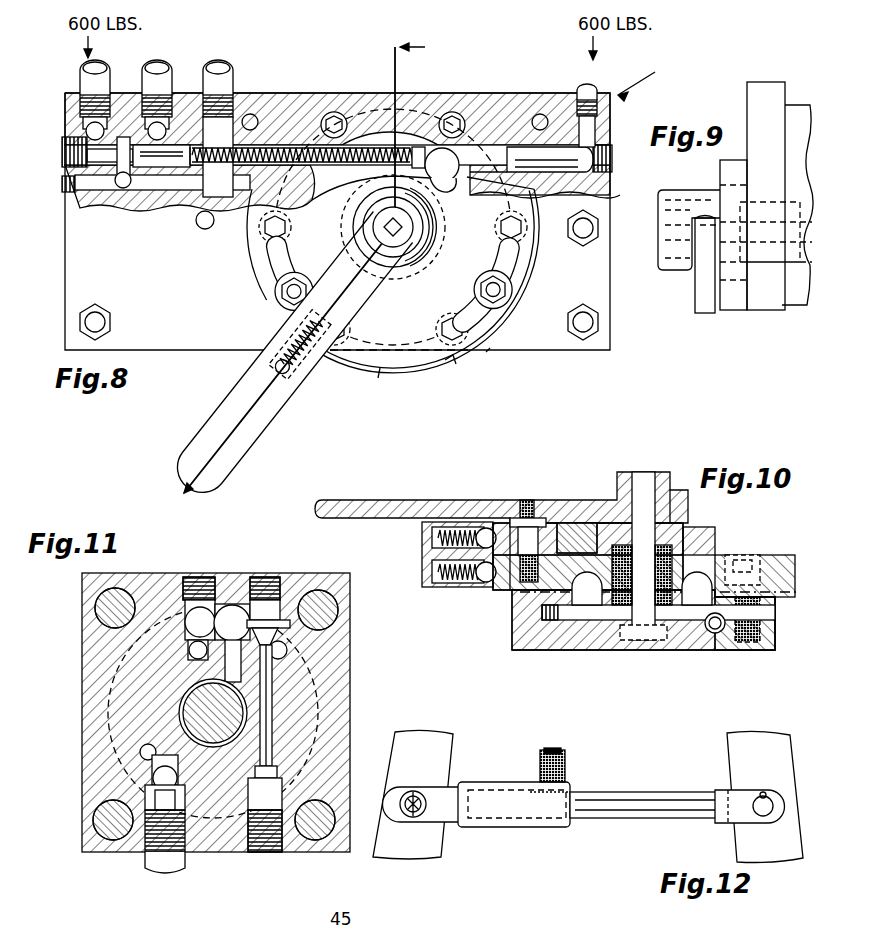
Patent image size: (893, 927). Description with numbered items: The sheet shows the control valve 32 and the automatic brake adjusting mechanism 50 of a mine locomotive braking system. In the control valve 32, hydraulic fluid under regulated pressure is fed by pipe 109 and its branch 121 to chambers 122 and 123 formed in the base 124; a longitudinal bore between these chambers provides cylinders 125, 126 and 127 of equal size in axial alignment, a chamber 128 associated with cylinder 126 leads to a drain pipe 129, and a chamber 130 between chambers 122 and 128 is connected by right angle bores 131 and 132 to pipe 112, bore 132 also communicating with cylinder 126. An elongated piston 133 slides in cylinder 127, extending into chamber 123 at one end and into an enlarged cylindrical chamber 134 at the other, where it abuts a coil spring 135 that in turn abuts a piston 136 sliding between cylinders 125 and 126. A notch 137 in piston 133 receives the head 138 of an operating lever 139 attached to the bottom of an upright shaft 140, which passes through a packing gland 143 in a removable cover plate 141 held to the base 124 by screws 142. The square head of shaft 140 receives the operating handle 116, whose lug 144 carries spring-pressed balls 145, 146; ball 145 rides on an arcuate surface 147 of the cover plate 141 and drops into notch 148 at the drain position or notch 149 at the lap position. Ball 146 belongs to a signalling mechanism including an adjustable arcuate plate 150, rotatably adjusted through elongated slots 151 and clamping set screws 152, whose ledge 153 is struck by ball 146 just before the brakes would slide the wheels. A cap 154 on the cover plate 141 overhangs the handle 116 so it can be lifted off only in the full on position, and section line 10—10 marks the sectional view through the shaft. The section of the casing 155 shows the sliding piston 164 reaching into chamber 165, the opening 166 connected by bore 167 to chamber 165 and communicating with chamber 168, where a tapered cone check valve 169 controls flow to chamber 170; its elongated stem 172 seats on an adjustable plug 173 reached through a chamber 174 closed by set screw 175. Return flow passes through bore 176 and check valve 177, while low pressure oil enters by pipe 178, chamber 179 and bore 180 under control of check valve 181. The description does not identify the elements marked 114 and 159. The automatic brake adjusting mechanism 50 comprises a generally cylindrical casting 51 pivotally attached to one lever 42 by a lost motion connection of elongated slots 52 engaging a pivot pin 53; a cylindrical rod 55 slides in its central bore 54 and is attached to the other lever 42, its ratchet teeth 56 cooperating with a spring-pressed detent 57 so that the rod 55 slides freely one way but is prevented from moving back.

In FIG. 8, the section line 10— 10 is at (318, 284).
In FIG. 8, the control valve 32 is at (649, 78).
In FIG. 12, the lever 42 is at (588, 796).
In FIG. 12, the automatic brake adjusting mechanism 50 is at (622, 832).
In FIG. 12, the generally cylindrical casting 51 is at (525, 830).
In FIG. 12, the elongated slots 52 is at (403, 812).
In FIG. 12, the pivot pin 53 is at (422, 808).
In FIG. 12, the central bore 54 is at (490, 792).
In FIG. 12, the cylindrical rod 55 is at (684, 820).
In FIG. 12, the ratchet teeth 56 is at (575, 790).
In FIG. 12, the spring-pressed detent 57 is at (567, 770).
In FIG. 8, the pipe 109 is at (100, 78).
In FIG. 8, the pipe 112 is at (224, 76).
In FIG. 11, the valve block 114 is at (158, 570).
In FIG. 8, the operating handle 116 is at (215, 430).
In FIG. 9, the operating handle 116 is at (705, 305).
In FIG. 10, the operating handle 116 is at (405, 505).
In FIG. 8, the branch 121 is at (590, 84).
In FIG. 8, the chamber 122 is at (82, 150).
In FIG. 8, the chamber 123 is at (603, 148).
In FIG. 8, the base 124 is at (500, 110).
In FIG. 9, the base 124 is at (797, 108).
In FIG. 10, the base 124 is at (528, 650).
In FIG. 8, the cylinder 125 is at (105, 162).
In FIG. 8, the cylinder 126 is at (195, 190).
In FIG. 8, the cylinder 127 is at (505, 176).
In FIG. 8, the chamber 128 is at (182, 128).
In FIG. 8, the drain pipe 129 is at (160, 70).
In FIG. 8, the chamber 130 is at (123, 137).
In FIG. 8, the bore 131 is at (205, 229).
In FIG. 8, the bore 132 is at (225, 132).
In FIG. 8, the elongated piston 133 is at (552, 160).
In FIG. 8, the enlarged cylindrical chamber 134 is at (333, 182).
In FIG. 10, the enlarged cylindrical chamber 134 is at (580, 620).
In FIG. 8, the coil spring 135 is at (292, 152).
In FIG. 10, the coil spring 135 is at (718, 634).
In FIG. 8, the piston 136 is at (160, 168).
In FIG. 8, the notch 137 is at (420, 150).
In FIG. 8, the head 138 is at (446, 182).
In FIG. 8, the operating lever 139 is at (435, 193).
In FIG. 10, the operating lever 139 is at (655, 632).
In FIG. 8, the upright shaft 140 is at (393, 247).
In FIG. 9, the upright shaft 140 is at (763, 240).
In FIG. 10, the upright shaft 140 is at (648, 552).
In FIG. 8, the removable cover plate 141 is at (550, 342).
In FIG. 9, the removable cover plate 141 is at (768, 90).
In FIG. 10, the removable cover plate 141 is at (505, 580).
In FIG. 8, the screws 142 is at (455, 115).
In FIG. 10, the screws 142 is at (758, 558).
In FIG. 10, the packing gland or stuffing box 143 is at (705, 545).
In FIG. 8, the lug 144 is at (275, 400).
In FIG. 10, the lug 144 is at (425, 540).
In FIG. 10, the spring-pressed ball 145 is at (484, 580).
In FIG. 8, the spring-pressed ball 146 is at (298, 385).
In FIG. 10, the spring-pressed ball 146 is at (486, 528).
In FIG. 8, the arcuate surface 147 is at (405, 375).
In FIG. 10, the arcuate surface 147 is at (500, 565).
In FIG. 8, the notch 148 is at (490, 355).
In FIG. 8, the notch 149 is at (450, 366).
In FIG. 8, the adjustable arcuate plate 150 is at (380, 370).
In FIG. 9, the adjustable arcuate plate 150 is at (733, 305).
In FIG. 10, the adjustable arcuate plate 150 is at (580, 540).
In FIG. 8, the elongated slots 151 is at (518, 262).
In FIG. 8, the clamping set screws 152 is at (512, 290).
In FIG. 10, the clamping set screws 152 is at (528, 510).
In FIG. 8, the ledge 153 is at (340, 362).
In FIG. 8, the cap 154 is at (428, 250).
In FIG. 9, the cap 154 is at (665, 237).
In FIG. 10, the cap 154 is at (683, 497).
In FIG. 11, the casing 155 is at (318, 673).
In FIG. 11, the bolt hole 159 is at (110, 606).
In FIG. 11, the sliding piston 164 is at (200, 712).
In FIG. 11, the chamber 165 is at (190, 690).
In FIG. 11, the opening 166 is at (235, 620).
In FIG. 11, the bore 167 is at (225, 668).
In FIG. 11, the chamber 168 is at (270, 620).
In FIG. 11, the tapered cone check valve 169 is at (268, 632).
In FIG. 11, the chamber 170 is at (285, 650).
In FIG. 11, the elongated stem 172 is at (272, 715).
In FIG. 11, the adjustable plug 173 is at (322, 785).
In FIG. 11, the chamber 174 is at (270, 828).
In FIG. 11, the set screw 175 is at (258, 840).
In FIG. 11, the bore 176 is at (190, 648).
In FIG. 11, the check valve 177 is at (200, 618).
In FIG. 11, the pipe 178 is at (145, 850).
In FIG. 11, the chamber 179 is at (160, 762).
In FIG. 11, the bore 180 is at (140, 752).
In FIG. 11, the check valve 181 is at (162, 782).